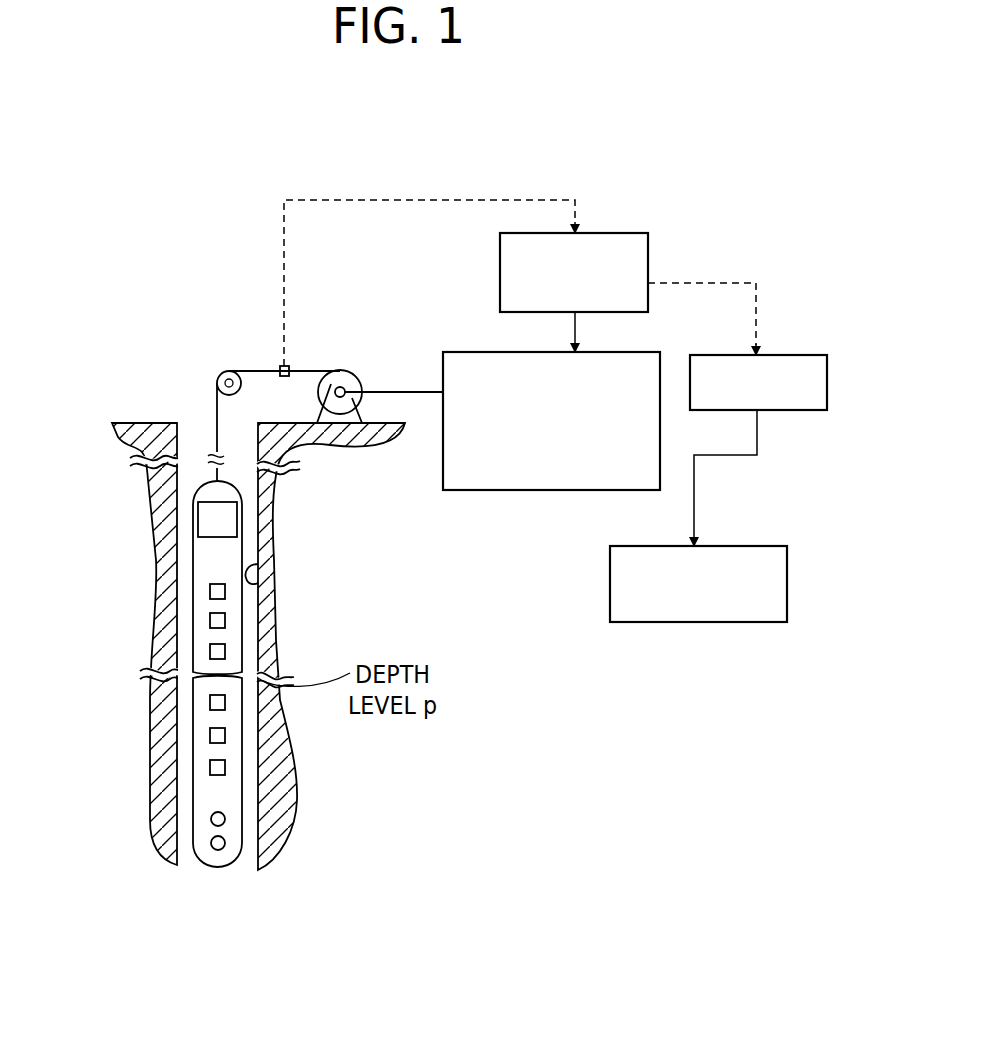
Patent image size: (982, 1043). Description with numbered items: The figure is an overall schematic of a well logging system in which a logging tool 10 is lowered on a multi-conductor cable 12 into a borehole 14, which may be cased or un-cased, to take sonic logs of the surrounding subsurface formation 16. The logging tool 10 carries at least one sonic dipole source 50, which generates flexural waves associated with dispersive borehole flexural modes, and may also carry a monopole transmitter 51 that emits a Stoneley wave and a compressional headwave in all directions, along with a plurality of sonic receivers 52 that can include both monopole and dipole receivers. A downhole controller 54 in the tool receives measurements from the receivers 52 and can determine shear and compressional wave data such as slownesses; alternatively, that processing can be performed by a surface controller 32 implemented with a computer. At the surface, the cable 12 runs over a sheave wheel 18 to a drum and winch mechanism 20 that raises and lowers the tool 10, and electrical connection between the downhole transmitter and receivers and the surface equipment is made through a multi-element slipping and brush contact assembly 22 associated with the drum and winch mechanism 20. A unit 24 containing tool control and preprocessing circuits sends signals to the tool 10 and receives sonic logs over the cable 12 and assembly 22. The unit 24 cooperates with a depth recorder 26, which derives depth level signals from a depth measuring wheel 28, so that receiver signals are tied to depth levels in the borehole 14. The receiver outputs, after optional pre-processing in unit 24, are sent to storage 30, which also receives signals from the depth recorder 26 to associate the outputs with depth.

The logging tool 10 is at (227, 550).
The multi-conductor cable 12 is at (218, 440).
The borehole 14 is at (258, 583).
The subsurface formation 16 is at (412, 574).
The sheave wheel 18 is at (226, 371).
The drum and winch mechanism 20 is at (345, 370).
The multi-element slipping and brush contact assembly 22 is at (355, 420).
The unit containing tool control and preprocessing circuits 24 is at (632, 352).
The depth recorder 26 is at (500, 258).
The depth measuring wheel 28 is at (289, 366).
The storage 30 is at (798, 355).
The surface controller 32 is at (788, 584).
The sonic dipole source 50 is at (220, 851).
The monopole transmitter 51 is at (225, 817).
The sonic receivers 52 is at (226, 592).
The downhole controller 54 is at (198, 507).